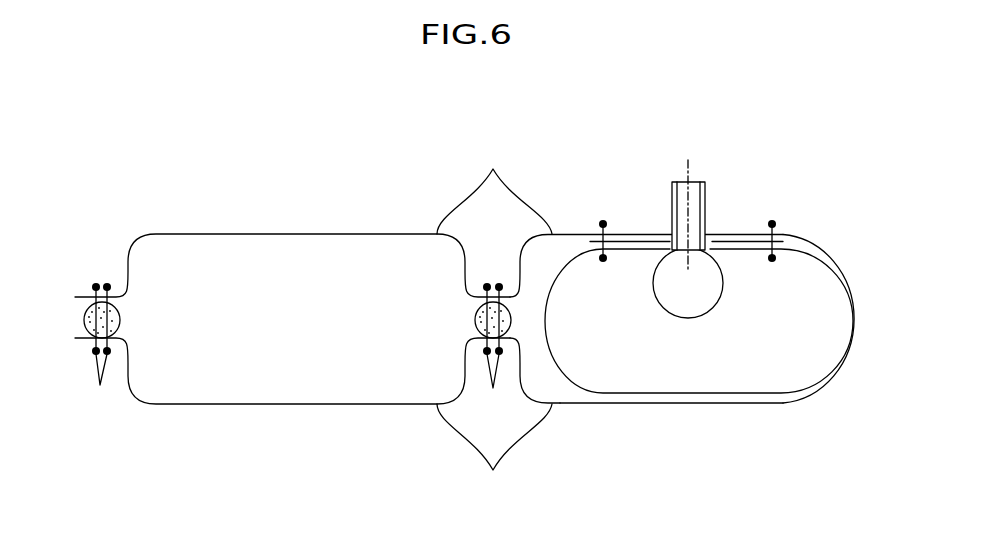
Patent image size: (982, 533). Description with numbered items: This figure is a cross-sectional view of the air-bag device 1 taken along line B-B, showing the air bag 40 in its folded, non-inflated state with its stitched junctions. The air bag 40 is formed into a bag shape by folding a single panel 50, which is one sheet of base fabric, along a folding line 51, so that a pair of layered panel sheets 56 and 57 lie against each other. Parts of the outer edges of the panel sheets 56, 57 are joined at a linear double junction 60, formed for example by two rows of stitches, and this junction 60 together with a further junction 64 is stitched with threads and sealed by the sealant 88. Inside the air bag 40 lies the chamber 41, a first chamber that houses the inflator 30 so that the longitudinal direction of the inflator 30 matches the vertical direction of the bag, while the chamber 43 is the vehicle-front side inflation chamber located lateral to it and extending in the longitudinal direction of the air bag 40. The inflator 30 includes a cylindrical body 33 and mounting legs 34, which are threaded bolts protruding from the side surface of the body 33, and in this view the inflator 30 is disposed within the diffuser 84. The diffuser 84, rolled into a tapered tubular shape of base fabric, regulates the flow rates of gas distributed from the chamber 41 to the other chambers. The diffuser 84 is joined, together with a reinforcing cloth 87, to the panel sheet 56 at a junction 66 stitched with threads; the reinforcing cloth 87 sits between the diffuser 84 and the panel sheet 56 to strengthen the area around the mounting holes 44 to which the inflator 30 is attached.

The air-bag device 1 is at (61, 131).
The inflator 30 is at (668, 300).
The body 33 is at (665, 313).
The mounting leg 34 is at (672, 202).
The air bag 40 is at (738, 408).
The chamber 41 is at (577, 248).
The chamber 43 is at (372, 248).
The mounting hole 44 is at (712, 234).
The panel 50 is at (494, 320).
The folding line 51 is at (860, 316).
The panel sheet 56 is at (494, 187).
The panel sheet 57 is at (494, 452).
The junction 60 is at (102, 385).
The junction 64 is at (494, 385).
The junction 66 is at (603, 222).
The diffuser 84 is at (772, 394).
The reinforcing cloth 87 is at (748, 242).
The sealant 88 is at (84, 319).